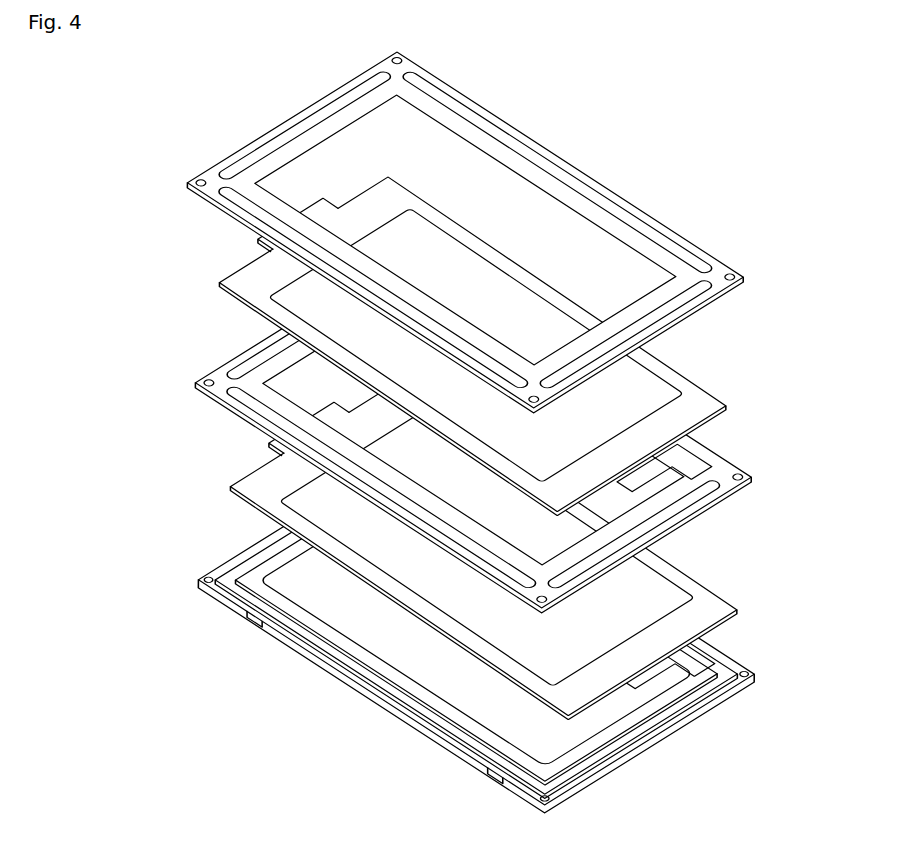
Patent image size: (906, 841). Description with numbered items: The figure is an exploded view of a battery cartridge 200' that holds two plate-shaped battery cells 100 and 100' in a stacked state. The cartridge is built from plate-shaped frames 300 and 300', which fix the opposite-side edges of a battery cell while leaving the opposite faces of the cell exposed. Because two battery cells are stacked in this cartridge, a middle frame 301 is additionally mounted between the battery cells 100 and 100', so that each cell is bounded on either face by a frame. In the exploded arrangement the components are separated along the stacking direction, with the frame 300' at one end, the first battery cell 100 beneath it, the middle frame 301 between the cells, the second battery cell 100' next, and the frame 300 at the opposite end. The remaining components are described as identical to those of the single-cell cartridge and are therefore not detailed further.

The battery cell 100 is at (508, 341).
The battery cell 100' is at (515, 545).
The battery cartridge 200' is at (387, 232).
The plate-shaped frame 300 is at (474, 631).
The plate-shaped frame 300' is at (440, 232).
The middle frame 301 is at (197, 385).